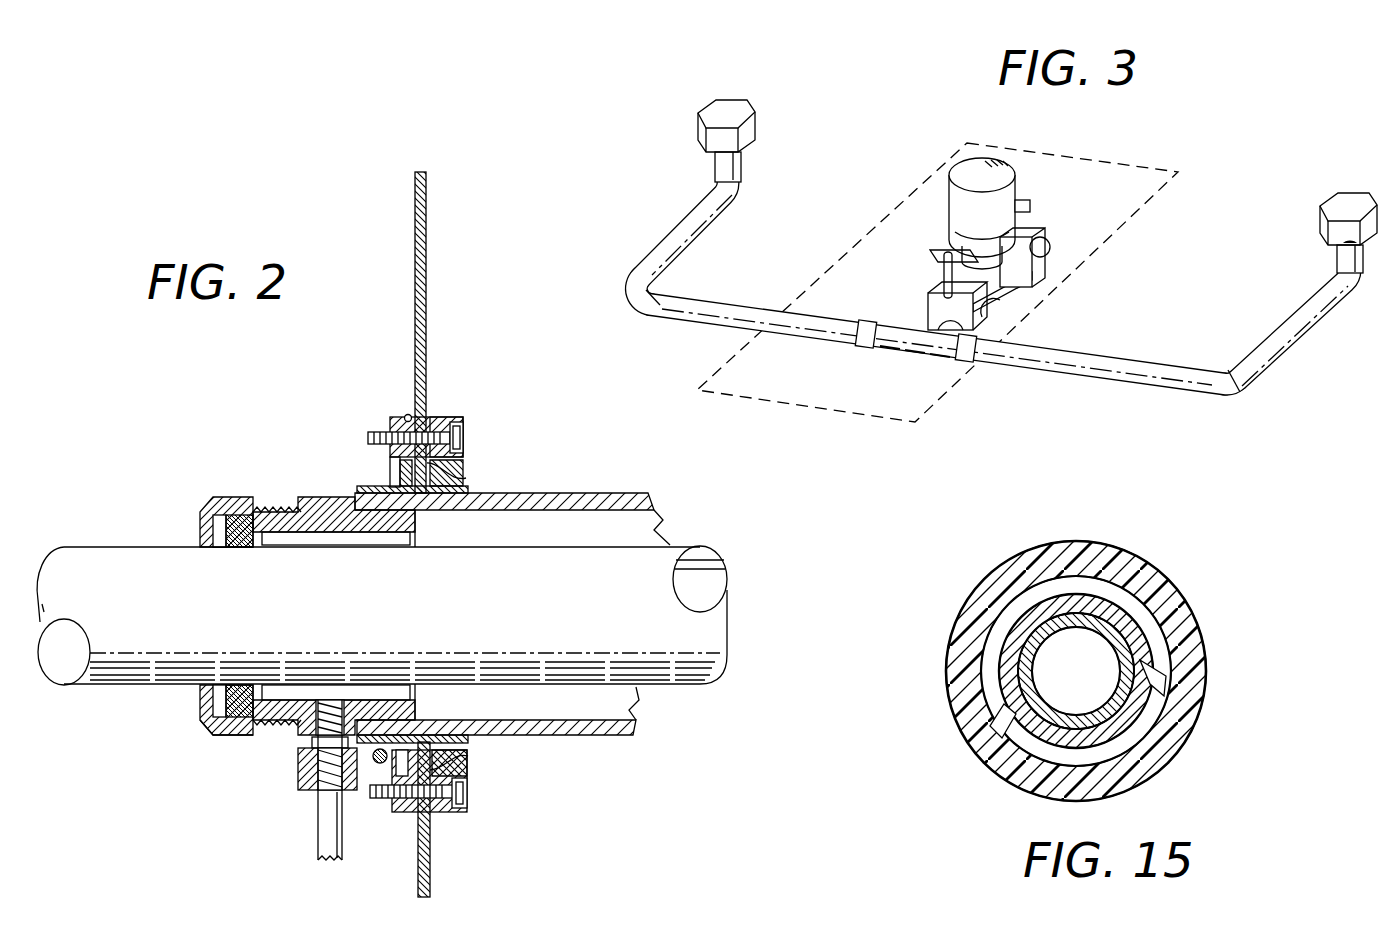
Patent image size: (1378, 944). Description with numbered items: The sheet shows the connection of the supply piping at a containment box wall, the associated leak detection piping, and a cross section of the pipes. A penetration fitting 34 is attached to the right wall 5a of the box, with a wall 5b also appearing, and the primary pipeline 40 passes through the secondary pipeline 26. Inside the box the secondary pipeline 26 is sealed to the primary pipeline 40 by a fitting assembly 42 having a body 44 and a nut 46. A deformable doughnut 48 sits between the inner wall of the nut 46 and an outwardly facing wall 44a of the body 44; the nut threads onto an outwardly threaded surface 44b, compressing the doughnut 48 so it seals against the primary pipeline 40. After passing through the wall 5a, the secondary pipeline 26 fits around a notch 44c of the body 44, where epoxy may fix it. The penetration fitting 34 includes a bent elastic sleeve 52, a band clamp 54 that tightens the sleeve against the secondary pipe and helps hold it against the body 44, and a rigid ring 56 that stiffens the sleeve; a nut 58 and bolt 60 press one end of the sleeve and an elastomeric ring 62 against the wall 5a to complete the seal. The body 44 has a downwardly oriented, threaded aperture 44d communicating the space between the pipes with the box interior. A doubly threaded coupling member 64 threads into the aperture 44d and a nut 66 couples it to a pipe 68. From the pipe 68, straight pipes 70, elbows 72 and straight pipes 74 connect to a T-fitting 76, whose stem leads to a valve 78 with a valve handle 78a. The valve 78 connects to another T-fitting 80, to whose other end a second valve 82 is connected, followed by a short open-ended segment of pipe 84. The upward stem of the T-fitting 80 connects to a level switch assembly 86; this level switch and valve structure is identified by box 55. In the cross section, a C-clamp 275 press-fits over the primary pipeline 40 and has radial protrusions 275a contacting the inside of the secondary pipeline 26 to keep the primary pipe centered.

In FIG. 2, the right wall 5a is at (427, 323).
In FIG. 2, the lower wall plate 5b is at (134, 572).
In FIG. 2, the secondary pipeline 26 is at (605, 492).
In FIG. 15, the secondary pipeline 26 is at (1155, 576).
In FIG. 2, the penetration fitting 34 is at (455, 415).
In FIG. 2, the primary pipeline 40 is at (678, 546).
In FIG. 15, the primary pipeline 40 is at (1080, 612).
In FIG. 2, the fitting assembly 42 is at (285, 498).
In FIG. 2, the body 44 is at (320, 556).
In FIG. 2, the outwardly facing wall 44a is at (240, 548).
In FIG. 2, the outwardly threaded surface 44b is at (200, 727).
In FIG. 2, the notch 44c is at (370, 536).
In FIG. 2, the aperture 44d is at (354, 700).
In FIG. 2, the nut 46 is at (223, 496).
In FIG. 2, the deformable doughnut 48 is at (222, 548).
In FIG. 2, the elastic sleeve 52 is at (464, 485).
In FIG. 2, the band clamp 54 is at (380, 764).
In FIG. 2, the rigid ring 56 is at (394, 460).
In FIG. 2, the nut 58 is at (396, 416).
In FIG. 2, the bolt 60 is at (465, 437).
In FIG. 2, the elastomeric ring 62 is at (440, 416).
In FIG. 2, the doubly threaded coupling member 64 is at (300, 742).
In FIG. 2, the nut 66 is at (304, 792).
In FIG. 3, the nut 66 is at (757, 120).
In FIG. 2, the pipe 68 is at (318, 845).
In FIG. 3, the pipe 68 is at (742, 168).
In FIG. 3, the straight pipes 70 is at (697, 232).
In FIG. 3, the elbows 72 is at (608, 310).
In FIG. 3, the straight pipes 74 is at (703, 322).
In FIG. 3, the T-fitting 76 is at (905, 350).
In FIG. 3, the valve 78 is at (990, 330).
In FIG. 3, the valve handle 78a is at (932, 258).
In FIG. 3, the T-fitting 80 is at (1002, 305).
In FIG. 3, the second valve 82 is at (1045, 264).
In FIG. 3, the segment of pipe 84 is at (1040, 212).
In FIG. 3, the level switch assembly 86 is at (1023, 188).
In FIG. 3, the box 55 is at (1125, 238).
In FIG. 15, the C-clamp 275 is at (1142, 760).
In FIG. 15, the radial protrusions 275a is at (1168, 688).